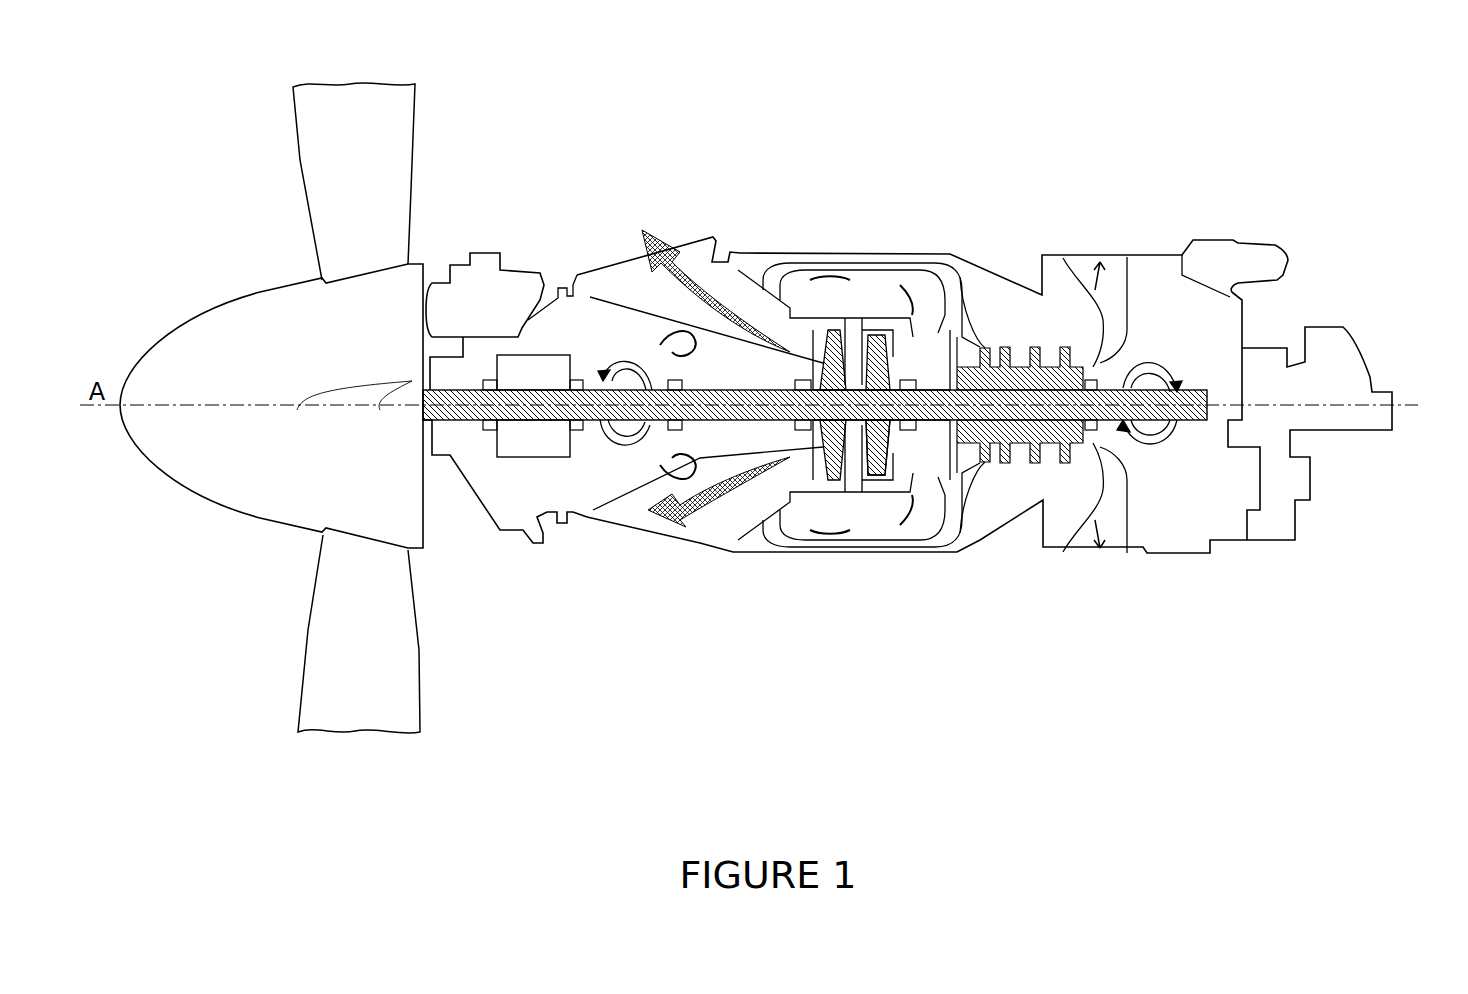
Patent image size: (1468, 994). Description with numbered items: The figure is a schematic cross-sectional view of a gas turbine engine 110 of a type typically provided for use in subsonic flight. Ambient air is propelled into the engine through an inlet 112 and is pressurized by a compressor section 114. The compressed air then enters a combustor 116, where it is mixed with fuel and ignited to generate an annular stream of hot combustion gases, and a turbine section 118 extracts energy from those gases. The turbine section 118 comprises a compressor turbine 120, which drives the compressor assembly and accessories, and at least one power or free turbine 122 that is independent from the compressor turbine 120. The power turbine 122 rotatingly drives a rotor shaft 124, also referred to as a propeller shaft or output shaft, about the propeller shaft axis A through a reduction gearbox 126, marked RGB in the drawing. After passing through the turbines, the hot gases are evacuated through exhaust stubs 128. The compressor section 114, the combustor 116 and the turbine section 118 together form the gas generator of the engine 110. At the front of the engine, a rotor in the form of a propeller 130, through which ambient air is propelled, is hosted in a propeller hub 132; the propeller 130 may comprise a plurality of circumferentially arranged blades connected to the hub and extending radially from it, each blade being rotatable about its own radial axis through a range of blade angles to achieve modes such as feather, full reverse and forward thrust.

The gas turbine engine 110 is at (774, 168).
The inlet 112 is at (1102, 240).
The compressor section 114 is at (995, 297).
The combustor 116 is at (888, 287).
The turbine section 118 is at (860, 415).
The compressor turbine 120 is at (895, 406).
The power turbine 122 is at (830, 404).
The rotor shaft 124 is at (550, 445).
The reduction gearbox 126 is at (533, 420).
The exhaust stubs 128 is at (631, 237).
The propeller 130 is at (325, 153).
The propeller hub 132 is at (250, 320).